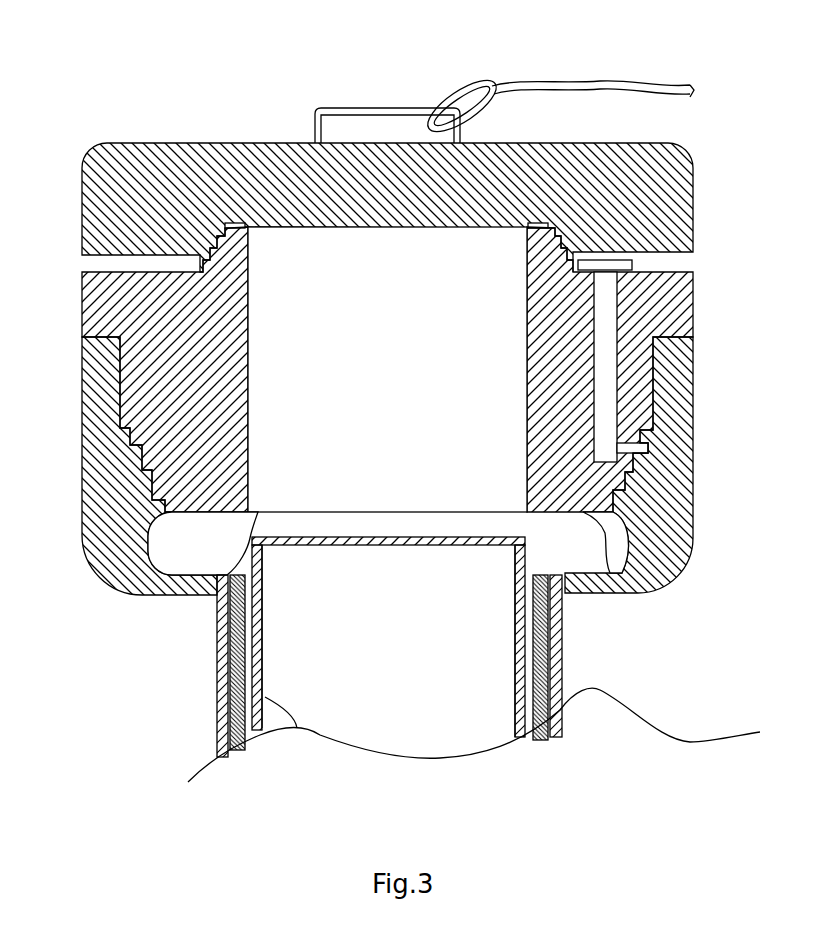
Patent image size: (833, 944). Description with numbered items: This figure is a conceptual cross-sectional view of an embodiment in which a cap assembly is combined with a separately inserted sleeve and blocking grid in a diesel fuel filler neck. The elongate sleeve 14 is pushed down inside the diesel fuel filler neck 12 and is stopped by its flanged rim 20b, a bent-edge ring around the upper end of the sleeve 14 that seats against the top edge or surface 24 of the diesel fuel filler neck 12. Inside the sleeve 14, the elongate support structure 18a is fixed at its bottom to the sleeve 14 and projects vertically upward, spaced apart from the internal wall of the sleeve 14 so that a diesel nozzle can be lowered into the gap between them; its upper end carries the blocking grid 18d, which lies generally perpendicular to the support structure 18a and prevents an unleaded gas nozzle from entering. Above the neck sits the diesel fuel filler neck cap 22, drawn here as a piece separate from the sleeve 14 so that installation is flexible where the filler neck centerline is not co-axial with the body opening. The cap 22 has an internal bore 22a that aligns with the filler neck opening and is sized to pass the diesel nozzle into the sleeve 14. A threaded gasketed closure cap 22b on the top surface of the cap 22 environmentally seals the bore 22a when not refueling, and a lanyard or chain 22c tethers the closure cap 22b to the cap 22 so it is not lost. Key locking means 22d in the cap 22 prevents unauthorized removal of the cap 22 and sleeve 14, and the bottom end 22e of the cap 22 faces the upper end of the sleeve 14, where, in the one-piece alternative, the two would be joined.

The diesel fuel filler neck 12 is at (491, 678).
The elongate sleeve 14 is at (517, 707).
The elongate support structure 18a is at (297, 728).
The blocking grid 18d is at (290, 547).
The flanged rim 20b is at (255, 520).
The diesel fuel filler neck cap 22 is at (693, 320).
The internal bore 22a is at (250, 332).
The closure cap 22b is at (682, 192).
The lanyard or chain 22c is at (600, 83).
The key locking means 22d is at (600, 295).
The bottom end of the cap 22e is at (627, 580).
The top edge or surface of the filler neck 24 is at (618, 623).